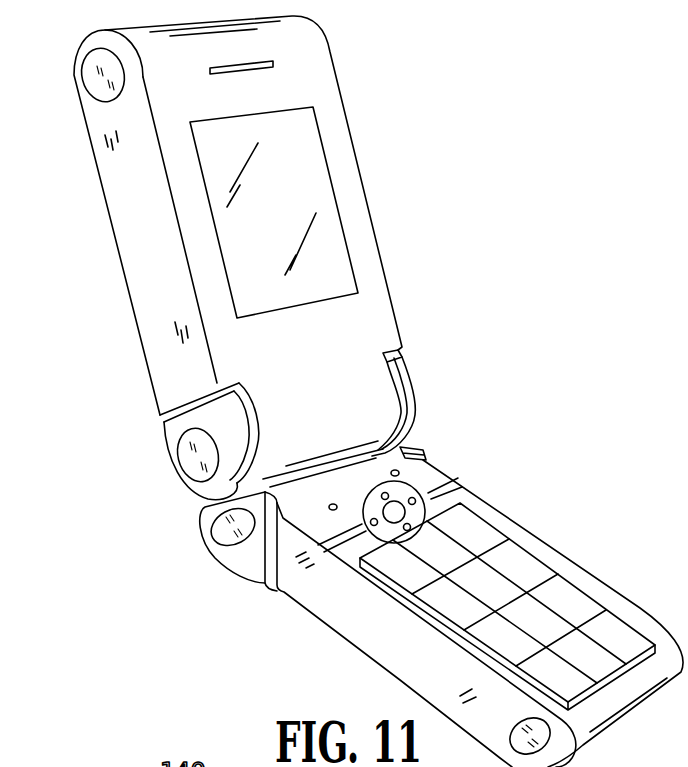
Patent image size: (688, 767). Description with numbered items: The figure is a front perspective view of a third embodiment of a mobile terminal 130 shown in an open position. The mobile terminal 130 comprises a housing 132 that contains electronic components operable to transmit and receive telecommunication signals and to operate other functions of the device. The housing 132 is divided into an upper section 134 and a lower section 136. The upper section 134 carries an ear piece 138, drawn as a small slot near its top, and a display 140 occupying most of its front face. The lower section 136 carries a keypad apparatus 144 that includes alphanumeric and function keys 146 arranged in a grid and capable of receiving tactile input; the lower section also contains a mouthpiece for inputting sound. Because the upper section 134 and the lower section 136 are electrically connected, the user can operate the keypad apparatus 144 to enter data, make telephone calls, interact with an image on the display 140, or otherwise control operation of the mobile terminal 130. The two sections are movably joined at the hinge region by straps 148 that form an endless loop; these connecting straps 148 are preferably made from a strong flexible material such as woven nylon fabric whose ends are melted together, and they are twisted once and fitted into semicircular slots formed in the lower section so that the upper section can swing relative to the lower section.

The mobile terminal 130 is at (353, 391).
The housing 132 is at (122, 268).
The upper section 134 is at (373, 323).
The lower section 136 is at (313, 605).
The ear piece 138 is at (253, 72).
The display 140 is at (307, 155).
The keypad apparatus 144 is at (507, 586).
The alphanumeric and function keys 146 is at (492, 537).
The straps 148 is at (397, 390).